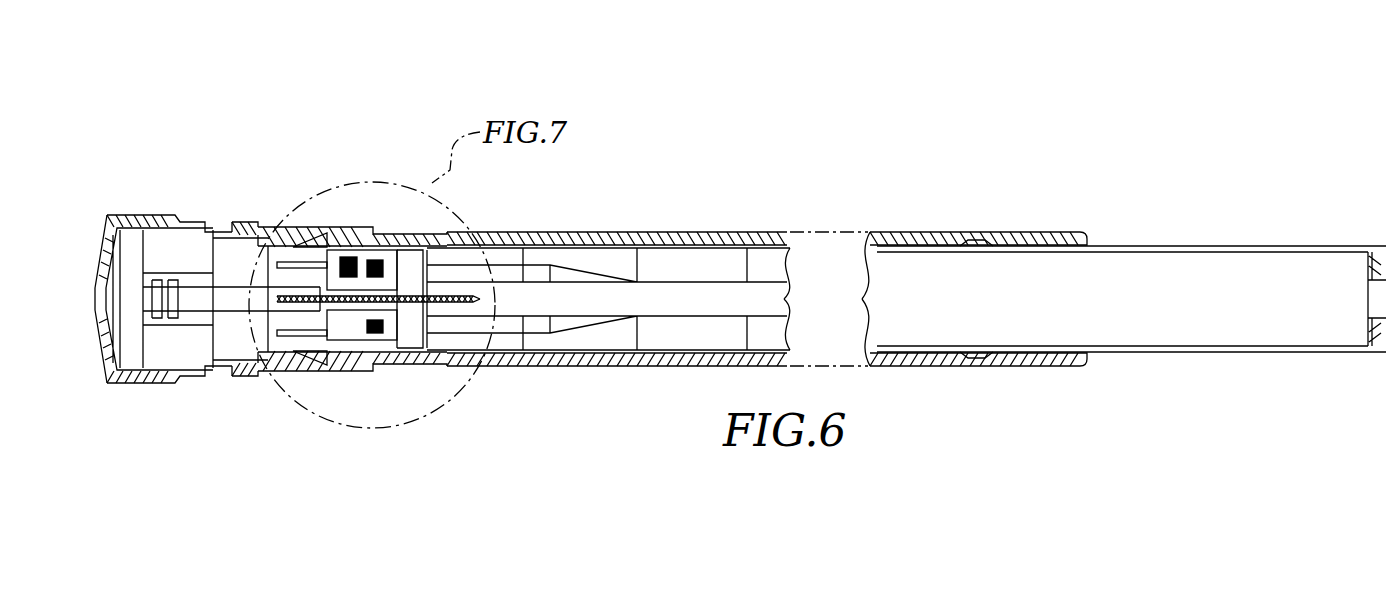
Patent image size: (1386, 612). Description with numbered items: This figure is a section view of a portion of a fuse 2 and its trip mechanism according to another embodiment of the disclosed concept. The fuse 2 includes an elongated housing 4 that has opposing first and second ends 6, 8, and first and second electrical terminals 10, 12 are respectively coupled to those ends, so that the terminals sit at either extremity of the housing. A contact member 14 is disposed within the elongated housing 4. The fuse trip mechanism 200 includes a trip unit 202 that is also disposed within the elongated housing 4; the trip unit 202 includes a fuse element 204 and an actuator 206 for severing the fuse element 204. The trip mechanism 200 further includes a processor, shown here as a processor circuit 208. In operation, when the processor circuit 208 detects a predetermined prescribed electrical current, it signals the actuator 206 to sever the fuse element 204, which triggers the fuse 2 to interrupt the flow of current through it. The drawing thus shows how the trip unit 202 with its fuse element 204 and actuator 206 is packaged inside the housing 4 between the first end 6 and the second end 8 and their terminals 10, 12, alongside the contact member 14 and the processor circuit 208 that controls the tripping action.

The fuse 2 is at (1000, 418).
The elongated housing 4 is at (893, 230).
The first end 6 is at (280, 400).
The second end 8 is at (1052, 215).
The first electrical terminal 10 is at (148, 209).
The second electrical terminal 12 is at (1203, 245).
The contact member 14 is at (708, 296).
The fuse trip mechanism 200 is at (311, 249).
The trip unit 202 is at (386, 225).
The fuse element 204 is at (421, 358).
The actuator 206 is at (324, 224).
The processor circuit 208 is at (279, 244).